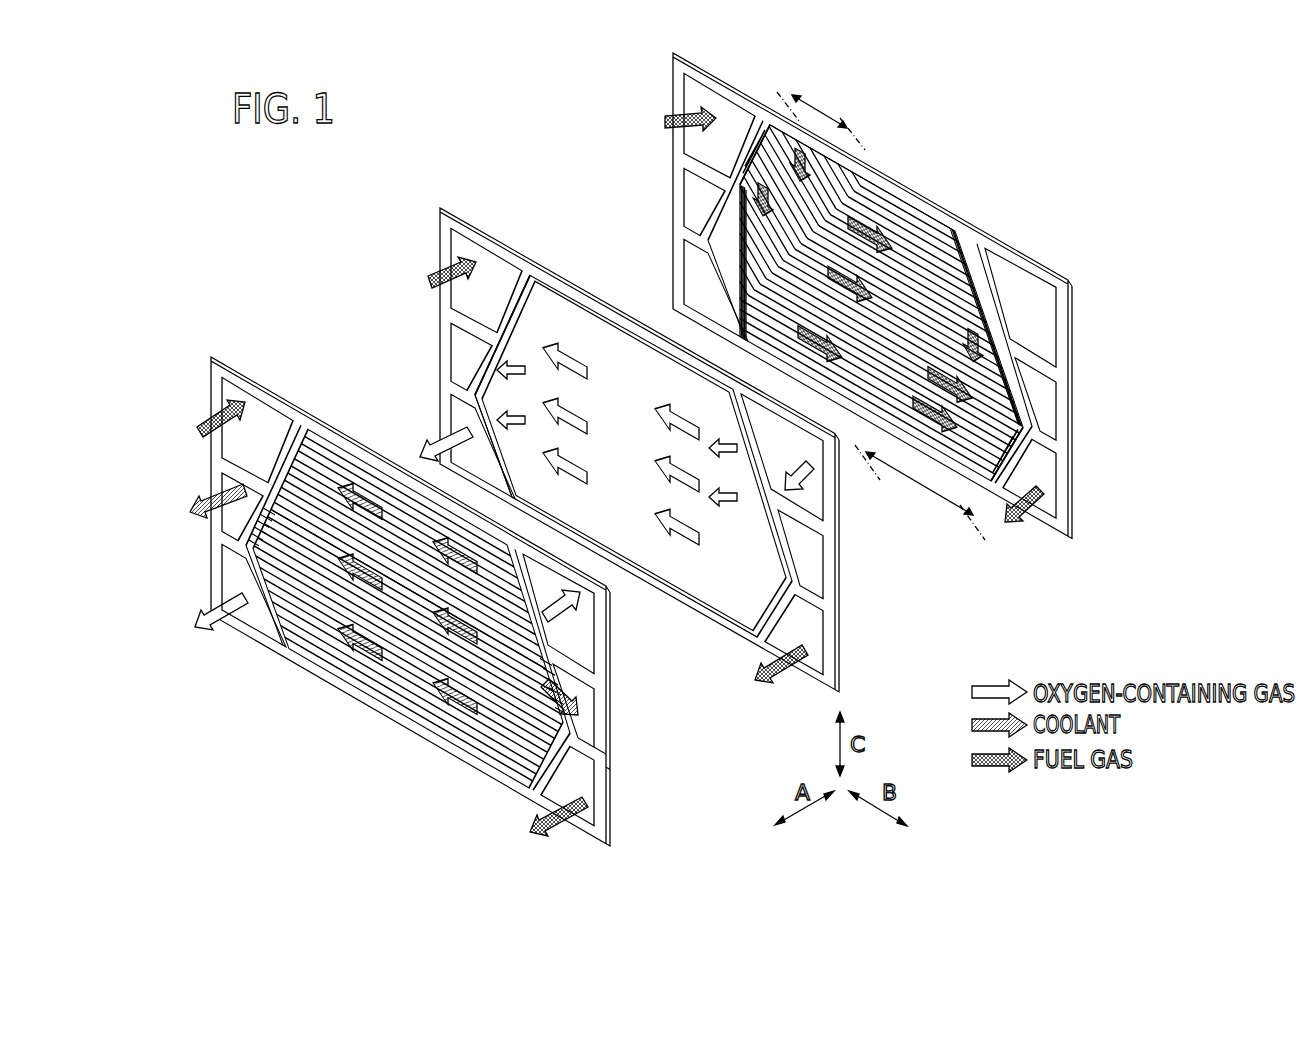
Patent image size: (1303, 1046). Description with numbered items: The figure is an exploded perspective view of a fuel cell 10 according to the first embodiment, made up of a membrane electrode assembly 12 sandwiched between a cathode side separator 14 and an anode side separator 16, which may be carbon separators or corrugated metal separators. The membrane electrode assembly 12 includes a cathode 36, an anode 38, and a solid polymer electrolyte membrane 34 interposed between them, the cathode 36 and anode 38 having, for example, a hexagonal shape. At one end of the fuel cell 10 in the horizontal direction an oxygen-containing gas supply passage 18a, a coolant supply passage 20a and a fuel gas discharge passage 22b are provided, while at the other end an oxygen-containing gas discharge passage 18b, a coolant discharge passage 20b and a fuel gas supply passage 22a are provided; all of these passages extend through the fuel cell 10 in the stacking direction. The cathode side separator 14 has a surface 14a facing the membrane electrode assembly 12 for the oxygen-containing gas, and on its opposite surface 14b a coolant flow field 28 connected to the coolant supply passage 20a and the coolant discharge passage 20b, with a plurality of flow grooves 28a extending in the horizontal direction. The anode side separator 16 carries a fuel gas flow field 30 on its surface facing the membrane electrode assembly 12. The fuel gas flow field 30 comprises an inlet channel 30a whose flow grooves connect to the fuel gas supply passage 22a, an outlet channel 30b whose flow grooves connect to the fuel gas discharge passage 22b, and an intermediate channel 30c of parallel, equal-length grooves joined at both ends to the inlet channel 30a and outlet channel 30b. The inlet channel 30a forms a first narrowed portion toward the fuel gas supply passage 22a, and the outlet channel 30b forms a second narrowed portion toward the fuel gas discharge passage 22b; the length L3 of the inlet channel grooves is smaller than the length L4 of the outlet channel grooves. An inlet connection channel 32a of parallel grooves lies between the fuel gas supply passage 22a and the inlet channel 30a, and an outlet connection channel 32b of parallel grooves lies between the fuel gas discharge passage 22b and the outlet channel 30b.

The fuel cell 10 is at (170, 199).
The membrane electrode assembly 12 is at (440, 206).
The cathode side separator 14 is at (211, 356).
The anode side separator 16 is at (1067, 280).
The oxygen-containing gas supply passage 18a is at (575, 640).
The oxygen-containing gas discharge passage 18b is at (240, 585).
The coolant supply passage 20a is at (590, 716).
The coolant discharge passage 20b is at (240, 486).
The fuel gas supply passage 22a is at (240, 400).
The fuel gas discharge passage 22b is at (590, 812).
The coolant flow field 28 is at (352, 470).
The flow grooves 28a is at (372, 495).
The fuel gas flow field 30 is at (925, 215).
The inlet channel 30a is at (745, 270).
The outlet channel 30b is at (1022, 418).
The intermediate channel 30c is at (858, 185).
The inlet connection channel 32a is at (740, 152).
The outlet connection channel 32b is at (1010, 492).
The solid polymer electrolyte membrane 34 is at (450, 382).
The cathode 36 is at (730, 582).
The anode 38 is at (566, 318).
The surface 14a is at (598, 770).
The surface 14b is at (605, 746).
The length of the flow grooves of the inlet channel L3 is at (821, 115).
The length of the flow grooves of the outlet channel L4 is at (920, 492).